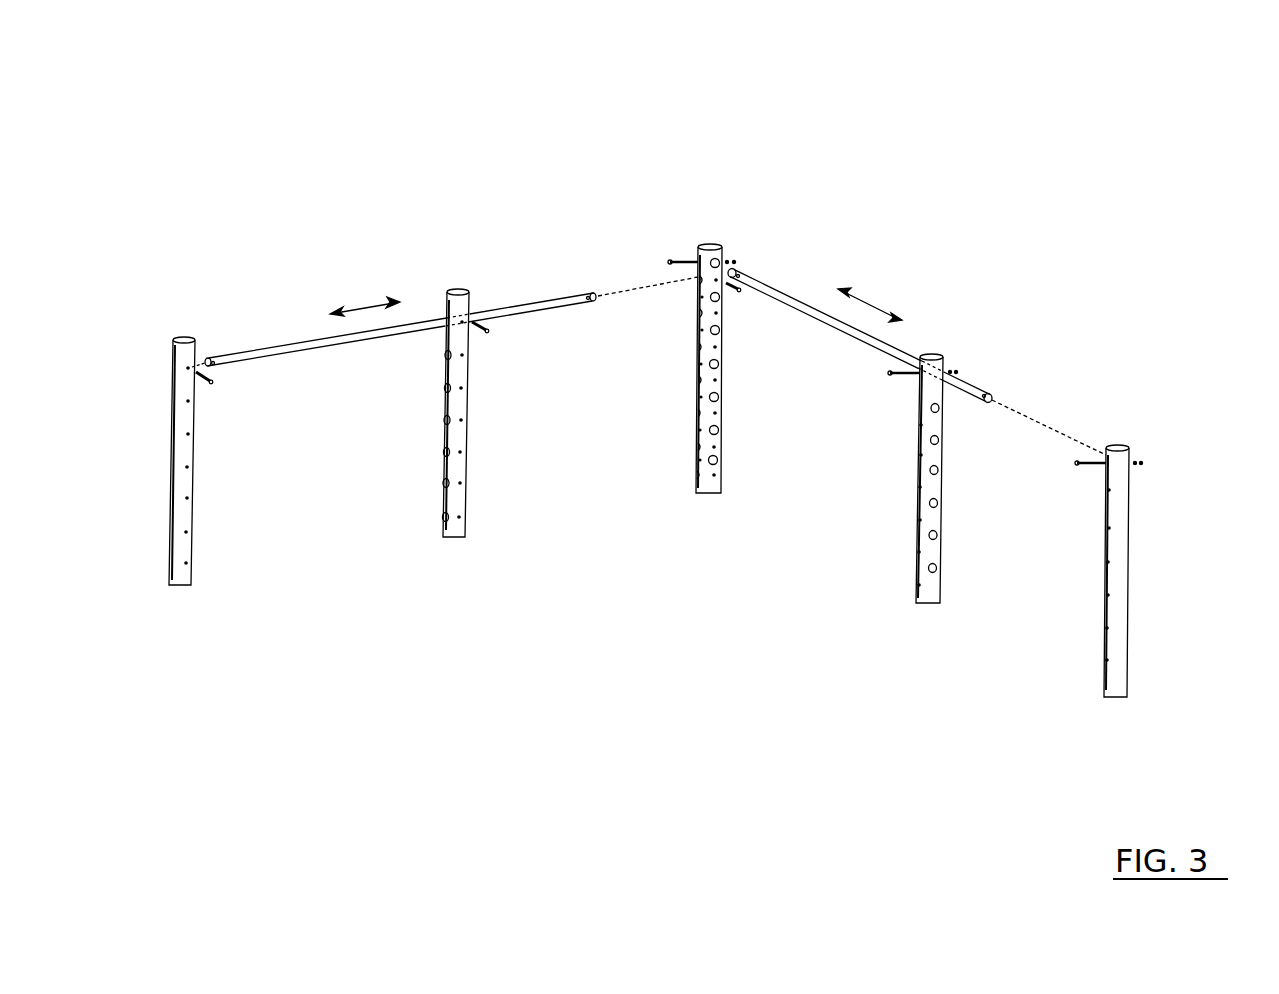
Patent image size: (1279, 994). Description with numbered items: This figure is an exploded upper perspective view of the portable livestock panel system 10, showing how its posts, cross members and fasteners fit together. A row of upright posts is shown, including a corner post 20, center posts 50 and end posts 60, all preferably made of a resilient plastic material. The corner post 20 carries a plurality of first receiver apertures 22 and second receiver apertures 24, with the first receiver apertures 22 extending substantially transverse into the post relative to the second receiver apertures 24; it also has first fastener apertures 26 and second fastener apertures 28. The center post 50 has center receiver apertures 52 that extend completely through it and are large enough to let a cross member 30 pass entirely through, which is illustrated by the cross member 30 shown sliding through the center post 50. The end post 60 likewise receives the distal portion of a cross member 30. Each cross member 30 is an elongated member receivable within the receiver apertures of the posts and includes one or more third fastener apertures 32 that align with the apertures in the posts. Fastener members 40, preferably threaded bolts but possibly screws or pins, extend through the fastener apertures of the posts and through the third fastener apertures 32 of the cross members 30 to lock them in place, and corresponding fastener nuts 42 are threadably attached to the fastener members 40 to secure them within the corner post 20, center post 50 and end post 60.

The portable livestock panel system 10 is at (1150, 140).
The corner post 20 is at (712, 495).
The first receiver apertures 22 is at (700, 440).
The second receiver apertures 24 is at (720, 330).
The first fastener apertures 26 is at (187, 499).
The second fastener apertures 28 is at (697, 363).
The cross members 30 is at (536, 305).
The third fastener apertures 32 is at (222, 362).
The fastener members 40 is at (205, 382).
The fastener nuts 42 is at (735, 260).
The center post 50 is at (453, 538).
The center receiver apertures 52 is at (446, 387).
The end post 60 is at (183, 583).